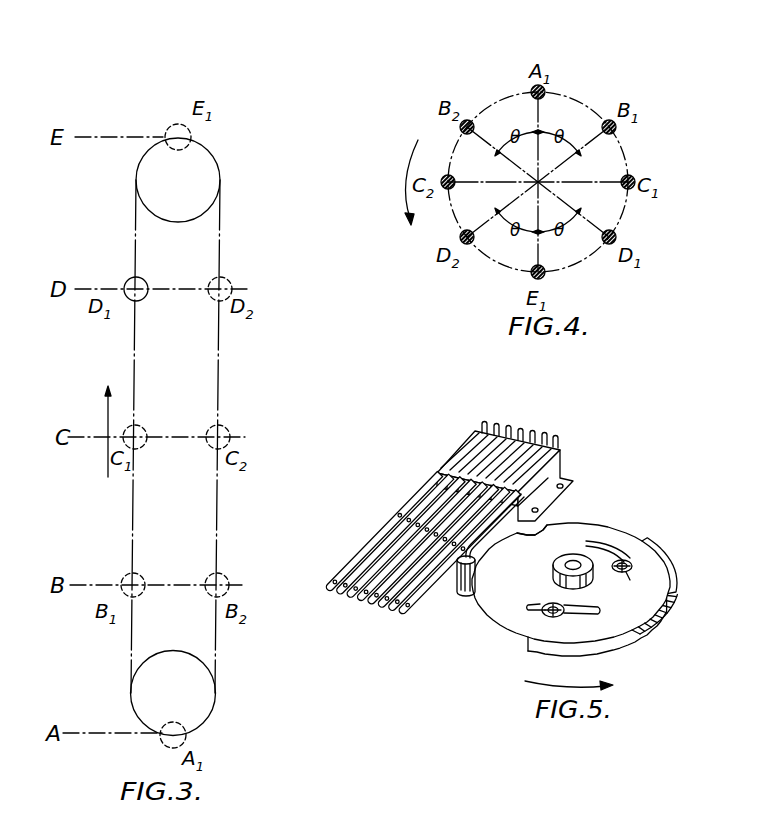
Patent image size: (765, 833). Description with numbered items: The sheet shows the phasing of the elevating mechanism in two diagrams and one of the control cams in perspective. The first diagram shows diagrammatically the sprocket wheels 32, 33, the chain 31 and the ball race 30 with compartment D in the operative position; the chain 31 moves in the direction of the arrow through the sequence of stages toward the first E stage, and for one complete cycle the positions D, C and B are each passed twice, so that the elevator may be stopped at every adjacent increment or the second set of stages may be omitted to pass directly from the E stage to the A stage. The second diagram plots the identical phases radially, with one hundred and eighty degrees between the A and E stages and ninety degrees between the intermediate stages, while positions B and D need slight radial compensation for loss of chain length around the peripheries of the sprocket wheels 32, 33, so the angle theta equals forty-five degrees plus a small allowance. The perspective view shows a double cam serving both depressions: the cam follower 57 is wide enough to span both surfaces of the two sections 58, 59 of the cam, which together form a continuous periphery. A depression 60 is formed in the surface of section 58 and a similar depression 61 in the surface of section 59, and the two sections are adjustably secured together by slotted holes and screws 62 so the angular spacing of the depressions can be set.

In FIG. 3, the ball race 30 is at (128, 280).
In FIG. 3, the chain 31 is at (218, 372).
In FIG. 3, the sprocket wheel 32 is at (207, 167).
In FIG. 3, the sprocket wheel 33 is at (207, 702).
In FIG. 5, the cam follower 57 is at (459, 591).
In FIG. 5, the cam section 58 is at (503, 598).
In FIG. 5, the cam section 59 is at (627, 633).
In FIG. 5, the depression 60 is at (543, 523).
In FIG. 5, the depression 61 is at (666, 546).
In FIG. 5, the screws 62 is at (622, 577).